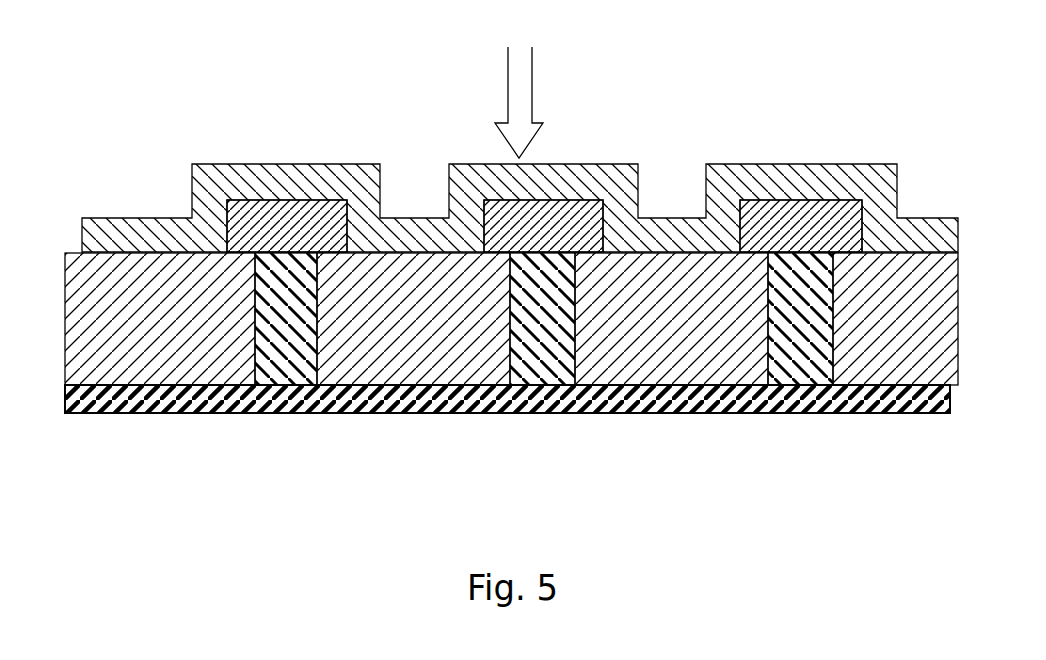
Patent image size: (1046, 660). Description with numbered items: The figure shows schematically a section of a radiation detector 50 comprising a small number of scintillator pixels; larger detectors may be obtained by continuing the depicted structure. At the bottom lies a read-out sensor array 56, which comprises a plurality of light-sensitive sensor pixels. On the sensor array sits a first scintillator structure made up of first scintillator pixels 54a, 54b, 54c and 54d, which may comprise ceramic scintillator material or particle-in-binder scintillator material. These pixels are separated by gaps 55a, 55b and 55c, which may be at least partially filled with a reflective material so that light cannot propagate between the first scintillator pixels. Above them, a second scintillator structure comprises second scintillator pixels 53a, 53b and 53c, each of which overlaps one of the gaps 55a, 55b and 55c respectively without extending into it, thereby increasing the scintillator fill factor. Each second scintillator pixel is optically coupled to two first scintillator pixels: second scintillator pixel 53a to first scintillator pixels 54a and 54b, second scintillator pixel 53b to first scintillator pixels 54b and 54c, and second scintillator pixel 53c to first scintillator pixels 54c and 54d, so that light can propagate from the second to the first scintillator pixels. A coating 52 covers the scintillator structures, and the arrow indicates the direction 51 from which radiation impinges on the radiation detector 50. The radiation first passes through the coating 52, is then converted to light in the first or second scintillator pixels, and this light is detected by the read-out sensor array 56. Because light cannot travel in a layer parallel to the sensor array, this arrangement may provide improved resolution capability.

The radiation detector 50 is at (137, 145).
The direction 51 is at (535, 82).
The coating 52 is at (217, 185).
The second scintillator pixel 53a is at (273, 222).
The second scintillator pixel 53b is at (566, 222).
The second scintillator pixel 53c is at (797, 222).
The first scintillator pixel 54a is at (143, 340).
The first scintillator pixel 54b is at (402, 343).
The first scintillator pixel 54c is at (668, 343).
The first scintillator pixel 54d is at (893, 343).
The gap 55a is at (288, 360).
The gap 55b is at (545, 360).
The gap 55c is at (800, 360).
The read-out sensor array 56 is at (181, 397).